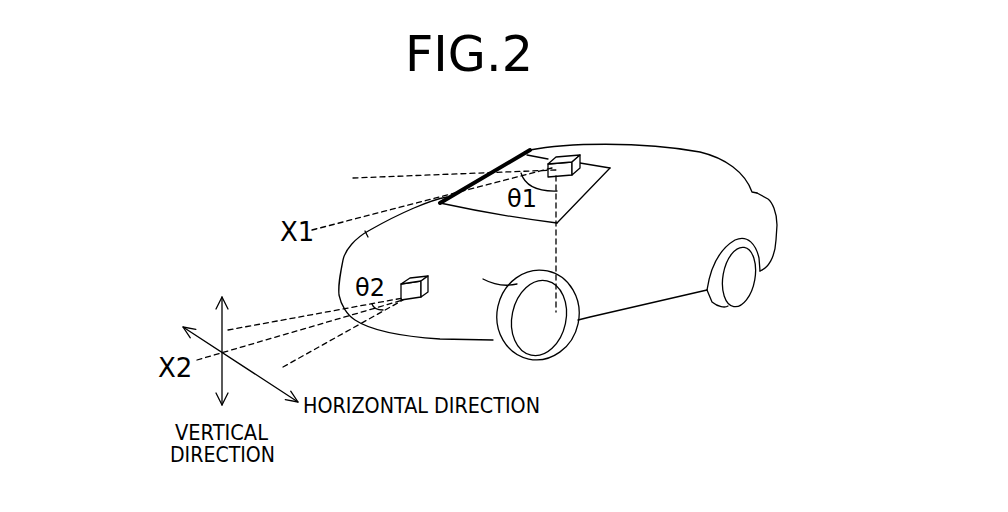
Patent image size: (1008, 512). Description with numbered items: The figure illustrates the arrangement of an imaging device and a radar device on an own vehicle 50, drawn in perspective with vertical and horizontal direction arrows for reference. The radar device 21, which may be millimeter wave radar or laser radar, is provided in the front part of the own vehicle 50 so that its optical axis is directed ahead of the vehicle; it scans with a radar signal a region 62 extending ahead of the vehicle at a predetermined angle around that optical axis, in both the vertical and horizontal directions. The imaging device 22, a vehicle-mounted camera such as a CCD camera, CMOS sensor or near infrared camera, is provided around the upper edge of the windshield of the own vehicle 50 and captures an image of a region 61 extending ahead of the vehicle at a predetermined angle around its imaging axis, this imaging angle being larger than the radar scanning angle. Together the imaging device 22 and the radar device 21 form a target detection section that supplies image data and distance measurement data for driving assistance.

The radar device 21 is at (428, 294).
The imaging device 22 is at (567, 156).
The own vehicle 50 is at (675, 152).
The region 61 is at (372, 176).
The region 62 is at (245, 325).